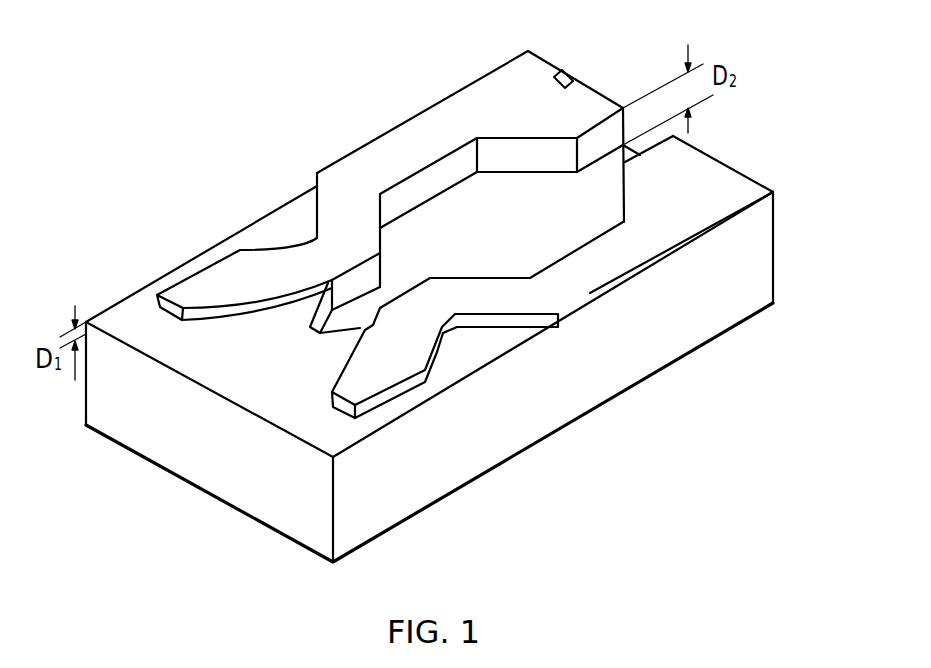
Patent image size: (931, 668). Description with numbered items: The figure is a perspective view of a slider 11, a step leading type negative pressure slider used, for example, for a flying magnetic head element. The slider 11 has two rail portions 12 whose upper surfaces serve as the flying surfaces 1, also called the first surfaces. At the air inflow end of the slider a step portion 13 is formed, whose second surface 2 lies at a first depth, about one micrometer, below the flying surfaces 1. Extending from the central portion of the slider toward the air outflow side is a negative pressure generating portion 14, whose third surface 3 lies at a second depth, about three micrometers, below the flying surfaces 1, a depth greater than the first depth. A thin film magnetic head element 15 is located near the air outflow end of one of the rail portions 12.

The flying surfaces 1 is at (416, 121).
The second surface 2 is at (230, 367).
The third surface 3 is at (500, 252).
The slider 11 is at (446, 80).
The rail portions 12 is at (328, 176).
The step portion 13 is at (340, 432).
The negative pressure generating portion 14 is at (523, 235).
The thin film magnetic head element 15 is at (569, 78).